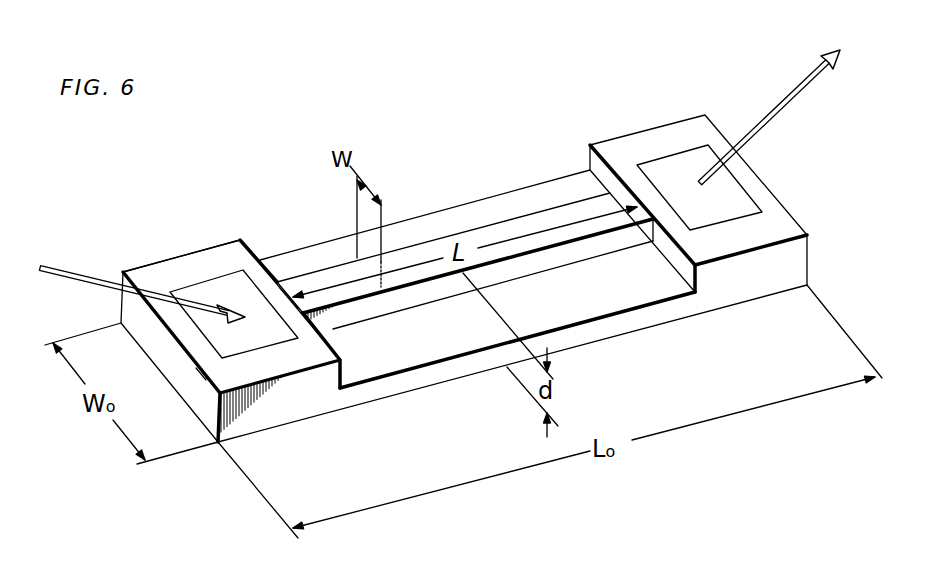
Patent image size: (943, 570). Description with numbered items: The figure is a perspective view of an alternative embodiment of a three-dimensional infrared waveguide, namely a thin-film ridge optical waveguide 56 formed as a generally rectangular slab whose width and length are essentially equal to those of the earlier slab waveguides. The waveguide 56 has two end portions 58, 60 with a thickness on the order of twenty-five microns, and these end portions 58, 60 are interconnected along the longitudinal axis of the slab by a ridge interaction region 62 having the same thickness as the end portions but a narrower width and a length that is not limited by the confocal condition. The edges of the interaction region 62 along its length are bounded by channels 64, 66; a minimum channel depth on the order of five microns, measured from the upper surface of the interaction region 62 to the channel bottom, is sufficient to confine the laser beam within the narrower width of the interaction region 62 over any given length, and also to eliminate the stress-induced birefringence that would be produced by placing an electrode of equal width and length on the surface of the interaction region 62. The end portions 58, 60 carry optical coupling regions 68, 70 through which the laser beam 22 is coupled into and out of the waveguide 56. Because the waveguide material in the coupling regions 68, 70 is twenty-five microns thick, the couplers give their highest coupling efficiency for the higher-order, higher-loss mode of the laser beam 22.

The laser beam 22 is at (76, 276).
The thin-film ridge optical waveguide 56 is at (707, 97).
The end portion 58 is at (177, 267).
The end portion 60 is at (627, 147).
The ridge interaction region 62 is at (483, 233).
The channel 64 is at (527, 192).
The channel 66 is at (622, 305).
The optical coupling region 68 is at (228, 285).
The optical coupling region 70 is at (677, 160).